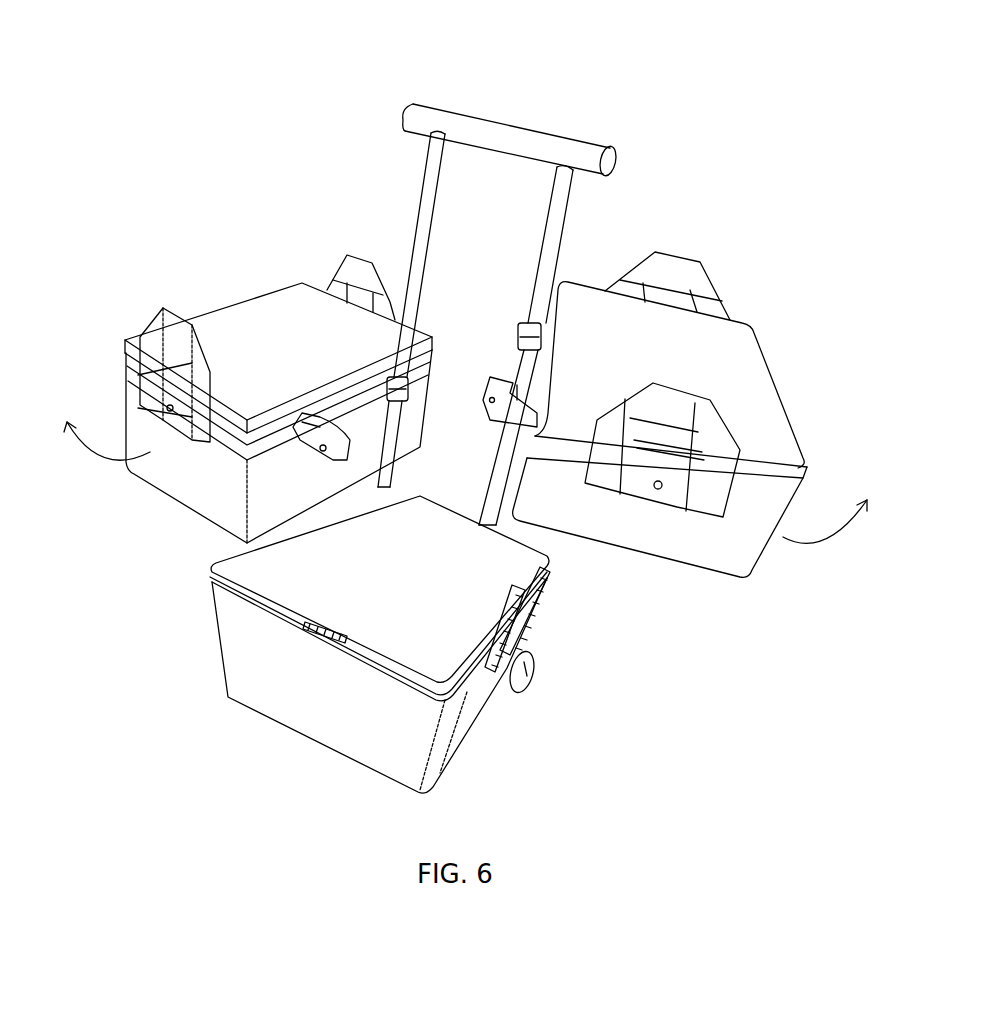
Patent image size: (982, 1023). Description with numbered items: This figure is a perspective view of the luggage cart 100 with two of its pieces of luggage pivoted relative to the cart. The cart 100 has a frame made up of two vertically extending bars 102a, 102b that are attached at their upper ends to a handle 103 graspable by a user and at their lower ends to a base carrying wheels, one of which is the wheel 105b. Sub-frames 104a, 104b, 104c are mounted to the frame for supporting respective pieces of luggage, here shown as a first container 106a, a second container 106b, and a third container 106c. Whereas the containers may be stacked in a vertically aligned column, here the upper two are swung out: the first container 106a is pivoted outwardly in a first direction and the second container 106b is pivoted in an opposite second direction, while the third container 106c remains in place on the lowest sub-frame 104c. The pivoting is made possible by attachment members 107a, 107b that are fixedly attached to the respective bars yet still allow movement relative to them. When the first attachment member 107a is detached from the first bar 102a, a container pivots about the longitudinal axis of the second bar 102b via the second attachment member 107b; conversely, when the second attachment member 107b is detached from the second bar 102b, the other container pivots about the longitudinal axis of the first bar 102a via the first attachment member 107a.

The luggage cart 100 is at (681, 71).
The handle 103 is at (425, 120).
The first bar 102a is at (433, 169).
The second bar 102b is at (572, 184).
The first attachment member 107a is at (400, 376).
The second attachment member 107b is at (531, 335).
The first container 106a is at (290, 310).
The second container 106b is at (697, 340).
The third container 106c is at (270, 677).
The first sub-frame 104a is at (552, 460).
The second sub-frame 104b is at (235, 448).
The third sub-frame 104c is at (535, 608).
The wheel 105b is at (533, 665).